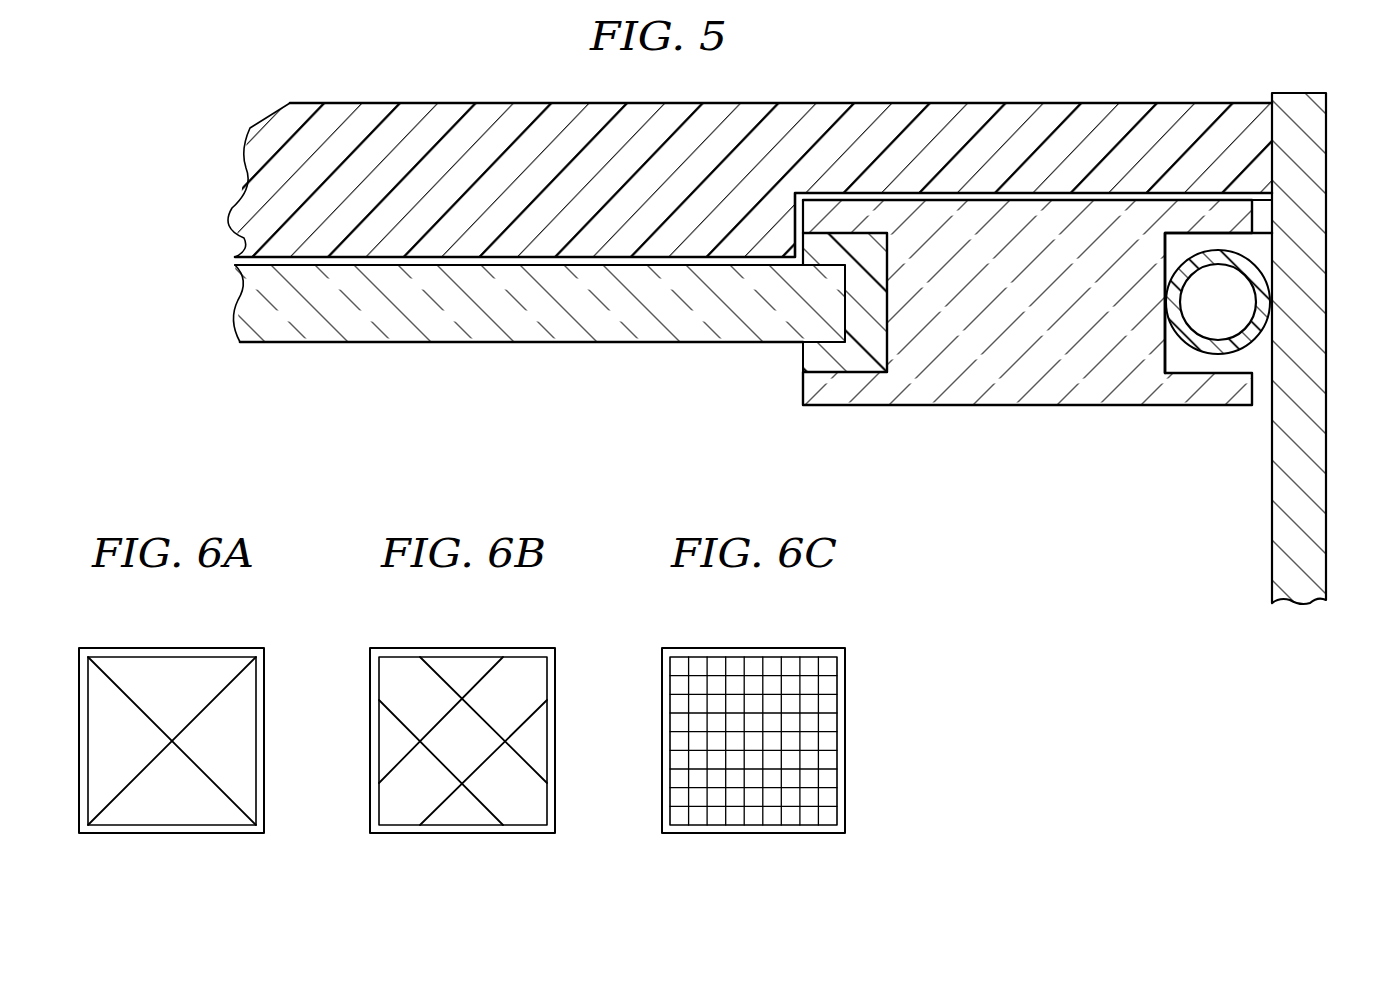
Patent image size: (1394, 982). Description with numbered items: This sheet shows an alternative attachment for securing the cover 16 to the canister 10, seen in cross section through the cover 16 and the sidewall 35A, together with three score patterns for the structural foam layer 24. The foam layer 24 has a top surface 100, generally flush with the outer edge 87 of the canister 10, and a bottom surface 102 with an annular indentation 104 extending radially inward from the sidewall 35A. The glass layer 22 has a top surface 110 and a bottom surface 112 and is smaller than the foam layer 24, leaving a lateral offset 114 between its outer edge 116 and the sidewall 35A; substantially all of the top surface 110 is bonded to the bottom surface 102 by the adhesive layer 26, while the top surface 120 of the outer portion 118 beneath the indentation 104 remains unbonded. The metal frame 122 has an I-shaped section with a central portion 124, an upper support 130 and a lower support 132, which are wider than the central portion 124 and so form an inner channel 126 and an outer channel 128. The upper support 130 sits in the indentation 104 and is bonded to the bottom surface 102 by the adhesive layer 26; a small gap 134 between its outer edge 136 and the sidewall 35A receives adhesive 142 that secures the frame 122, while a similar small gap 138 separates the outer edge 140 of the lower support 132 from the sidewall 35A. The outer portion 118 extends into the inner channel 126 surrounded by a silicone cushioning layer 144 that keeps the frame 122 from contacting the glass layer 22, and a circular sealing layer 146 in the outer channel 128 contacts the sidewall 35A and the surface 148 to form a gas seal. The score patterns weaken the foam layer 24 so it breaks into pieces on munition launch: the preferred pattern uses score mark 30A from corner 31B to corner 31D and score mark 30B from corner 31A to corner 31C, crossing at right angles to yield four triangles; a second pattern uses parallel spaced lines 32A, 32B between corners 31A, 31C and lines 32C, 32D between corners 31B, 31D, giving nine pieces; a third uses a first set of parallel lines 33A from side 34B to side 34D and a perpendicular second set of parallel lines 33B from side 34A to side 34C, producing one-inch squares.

In FIG. 5, the canister 10 is at (1354, 506).
In FIG. 6A, the canister 10 is at (175, 648).
In FIG. 5, the cover 16 is at (446, 76).
In FIG. 5, the glass layer 22 is at (240, 325).
In FIG. 5, the foam layer 24 is at (240, 148).
In FIG. 6A, the foam layer 24 is at (258, 768).
In FIG. 5, the adhesive layer 26 is at (240, 260).
In FIG. 5, the outer edge 87 is at (1300, 93).
In FIG. 5, the top surface 100 is at (325, 103).
In FIG. 5, the bottom surface 102 is at (462, 258).
In FIG. 5, the indentation 104 is at (803, 258).
In FIG. 5, the top surface 110 is at (242, 228).
In FIG. 5, the bottom surface 112 is at (327, 342).
In FIG. 5, the lateral offset 114 is at (1252, 415).
In FIG. 5, the outer edge 116 is at (845, 318).
In FIG. 5, the outer portion 118 is at (845, 415).
In FIG. 5, the top surface 120 is at (847, 257).
In FIG. 5, the frame 122 is at (1010, 312).
In FIG. 5, the central portion 124 is at (1085, 330).
In FIG. 5, the inner channel 126 is at (868, 372).
In FIG. 5, the outer channel 128 is at (1168, 350).
In FIG. 5, the upper support 130 is at (1022, 213).
In FIG. 5, the lower support 132 is at (960, 405).
In FIG. 5, the small gap 134 is at (1302, 222).
In FIG. 5, the outer edge 136 is at (1258, 215).
In FIG. 5, the small gap 138 is at (1263, 407).
In FIG. 5, the outer edge 140 is at (1273, 363).
In FIG. 5, the adhesive 142 is at (1265, 215).
In FIG. 5, the cushioning layer 144 is at (803, 352).
In FIG. 5, the sealing layer 146 is at (1268, 255).
In FIG. 5, the surface 148 is at (1167, 262).
In FIG. 5, the sidewall 35A is at (1327, 582).
In FIG. 6A, the score mark 30A is at (203, 710).
In FIG. 6A, the score mark 30B is at (207, 782).
In FIG. 6A, the corner 31A is at (88, 657).
In FIG. 6B, the corner 31A is at (379, 657).
In FIG. 6A, the corner 31B is at (88, 825).
In FIG. 6B, the corner 31B is at (379, 825).
In FIG. 6A, the corner 31C is at (256, 825).
In FIG. 6B, the corner 31C is at (547, 825).
In FIG. 6A, the corner 31D is at (256, 657).
In FIG. 6B, the corner 31D is at (547, 657).
In FIG. 6B, the line 32A is at (410, 722).
In FIG. 6B, the line 32B is at (440, 677).
In FIG. 6B, the line 32C is at (410, 755).
In FIG. 6B, the line 32D is at (455, 812).
In FIG. 6C, the first set of parallel lines 33A is at (820, 660).
In FIG. 6C, the second set of parallel lines 33B is at (828, 672).
In FIG. 6C, the side 34A is at (670, 757).
In FIG. 6C, the side 34B is at (772, 827).
In FIG. 6C, the side 34C is at (840, 742).
In FIG. 6C, the side 34D is at (752, 657).